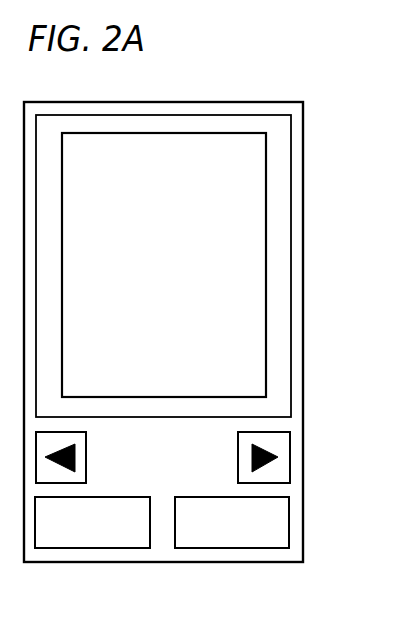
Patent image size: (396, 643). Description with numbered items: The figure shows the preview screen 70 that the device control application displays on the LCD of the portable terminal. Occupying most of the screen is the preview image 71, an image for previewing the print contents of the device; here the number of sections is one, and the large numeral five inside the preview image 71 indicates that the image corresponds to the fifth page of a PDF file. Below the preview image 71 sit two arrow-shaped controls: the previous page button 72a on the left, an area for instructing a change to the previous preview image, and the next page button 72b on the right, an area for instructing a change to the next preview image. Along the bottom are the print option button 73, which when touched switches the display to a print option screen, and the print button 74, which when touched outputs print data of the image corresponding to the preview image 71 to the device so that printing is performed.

The preview screen 70 is at (249, 102).
The preview image 71 is at (259, 173).
The previous page button 72a is at (80, 446).
The next page button 72b is at (243, 446).
The print option button 73 is at (126, 501).
The print button 74 is at (193, 501).